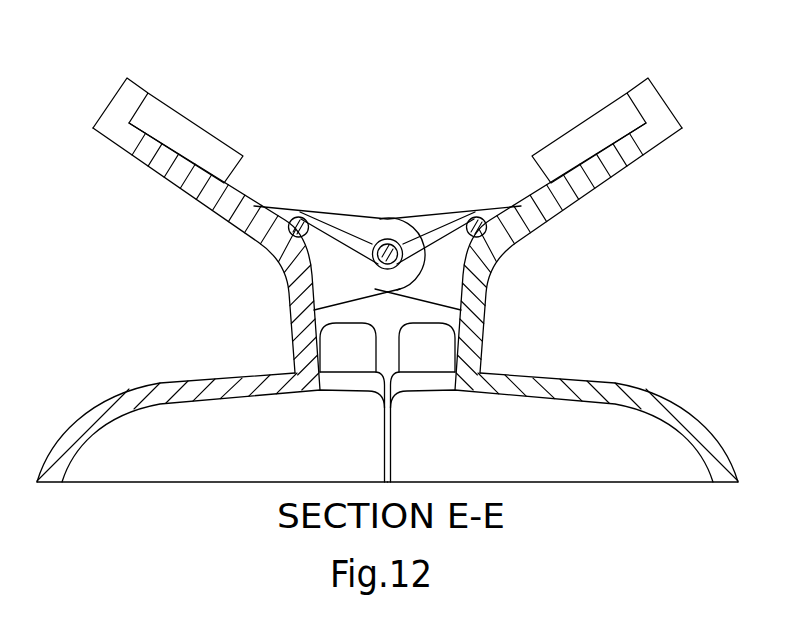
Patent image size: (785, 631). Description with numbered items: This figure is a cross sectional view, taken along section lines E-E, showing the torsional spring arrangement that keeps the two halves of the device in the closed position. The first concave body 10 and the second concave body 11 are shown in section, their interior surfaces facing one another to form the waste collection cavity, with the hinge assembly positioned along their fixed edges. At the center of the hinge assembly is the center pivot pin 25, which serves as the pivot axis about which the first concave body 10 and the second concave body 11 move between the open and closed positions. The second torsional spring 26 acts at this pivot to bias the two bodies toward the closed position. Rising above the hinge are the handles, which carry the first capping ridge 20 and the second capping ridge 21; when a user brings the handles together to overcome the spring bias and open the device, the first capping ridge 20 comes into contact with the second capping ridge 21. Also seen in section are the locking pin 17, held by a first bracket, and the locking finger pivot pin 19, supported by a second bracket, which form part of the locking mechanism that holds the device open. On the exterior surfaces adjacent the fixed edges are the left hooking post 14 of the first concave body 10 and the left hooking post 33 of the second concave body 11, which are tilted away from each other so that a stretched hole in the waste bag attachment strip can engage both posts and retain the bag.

The first concave body 10 is at (613, 380).
The second concave body 11 is at (152, 382).
The left hooking post 14 is at (432, 343).
The locking pin 17 is at (299, 218).
The locking finger pivot pin 19 is at (477, 222).
The first capping ridge 20 is at (643, 78).
The second capping ridge 21 is at (143, 80).
The center pivot pin 25 is at (386, 250).
The second torsional spring 26 is at (438, 224).
The left hooking post 33 is at (345, 352).